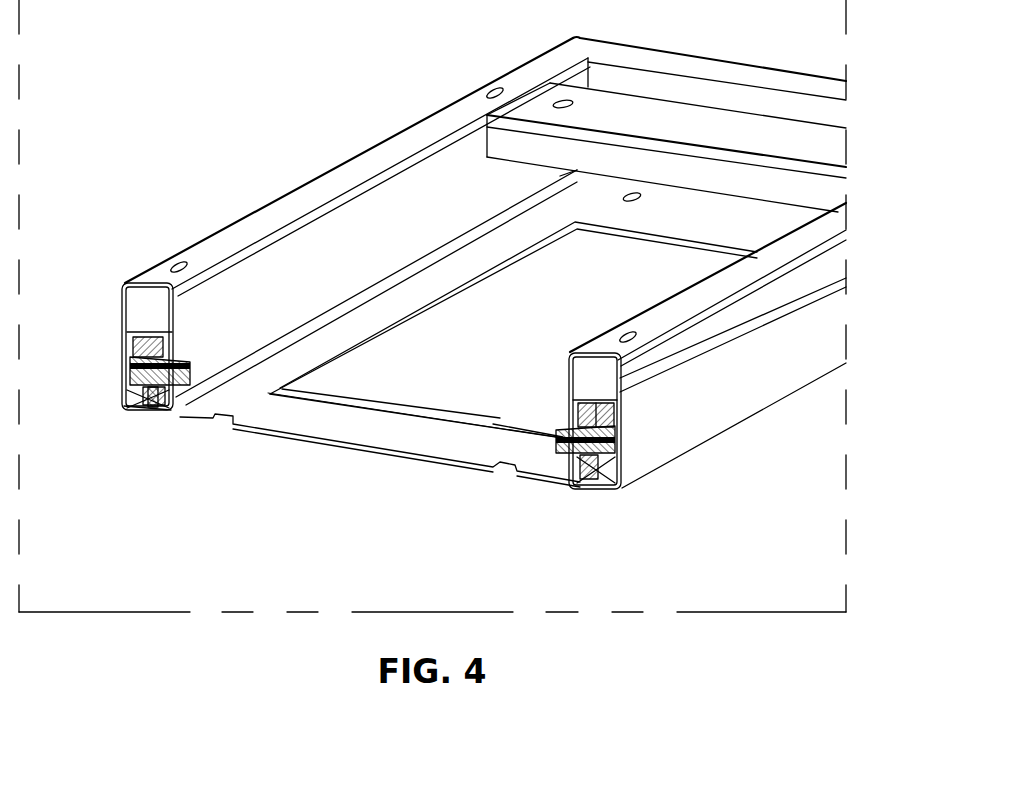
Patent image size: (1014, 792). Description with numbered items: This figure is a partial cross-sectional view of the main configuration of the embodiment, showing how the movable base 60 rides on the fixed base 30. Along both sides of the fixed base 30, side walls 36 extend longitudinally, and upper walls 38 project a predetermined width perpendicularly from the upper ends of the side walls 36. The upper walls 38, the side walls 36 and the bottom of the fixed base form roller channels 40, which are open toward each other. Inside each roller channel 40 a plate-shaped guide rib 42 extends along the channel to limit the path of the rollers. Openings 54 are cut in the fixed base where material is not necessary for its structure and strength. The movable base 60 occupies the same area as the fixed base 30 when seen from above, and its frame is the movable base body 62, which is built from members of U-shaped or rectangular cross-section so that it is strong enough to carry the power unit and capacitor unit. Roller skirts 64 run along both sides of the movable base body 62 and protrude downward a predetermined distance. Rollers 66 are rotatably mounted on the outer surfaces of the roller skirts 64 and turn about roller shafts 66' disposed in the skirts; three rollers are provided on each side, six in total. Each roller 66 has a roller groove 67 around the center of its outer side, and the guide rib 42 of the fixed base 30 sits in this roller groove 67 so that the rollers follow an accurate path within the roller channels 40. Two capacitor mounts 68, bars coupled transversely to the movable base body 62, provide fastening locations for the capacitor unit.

The fixed base 30 is at (781, 406).
The side walls 36 is at (126, 386).
The upper walls 38 is at (124, 280).
The roller channels 40 is at (123, 407).
The guide ribs 42 is at (153, 408).
The openings 54 is at (530, 413).
The movable base 60 is at (252, 204).
The movable base body 62 is at (330, 185).
The roller skirts 64 is at (250, 325).
The rollers 66 is at (401, 477).
The roller shafts 66' is at (110, 362).
The roller groove 67 is at (148, 347).
The capacitor mounts 68 is at (518, 92).